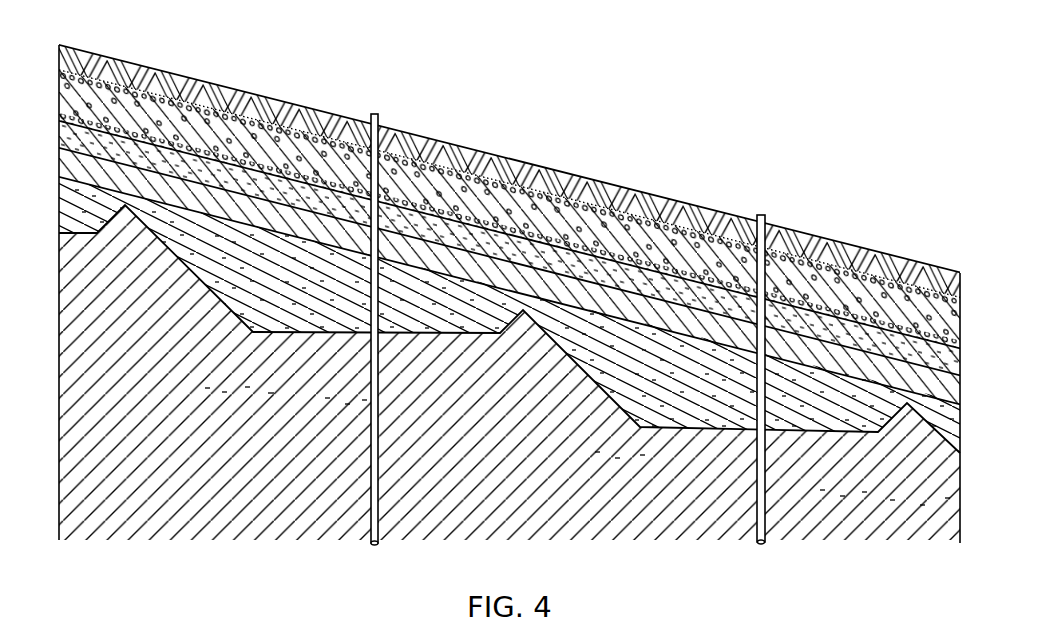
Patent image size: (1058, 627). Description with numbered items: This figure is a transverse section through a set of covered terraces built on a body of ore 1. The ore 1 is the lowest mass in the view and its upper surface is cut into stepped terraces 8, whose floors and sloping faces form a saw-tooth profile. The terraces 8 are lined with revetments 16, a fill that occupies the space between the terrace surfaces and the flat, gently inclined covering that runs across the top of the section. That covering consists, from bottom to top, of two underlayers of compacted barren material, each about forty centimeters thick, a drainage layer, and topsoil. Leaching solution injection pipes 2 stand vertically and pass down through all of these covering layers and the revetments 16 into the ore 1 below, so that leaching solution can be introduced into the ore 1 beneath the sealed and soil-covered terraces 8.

The ore 1 is at (858, 518).
The leaching solution injection pipes 2 is at (378, 113).
The terraces 8 is at (798, 432).
The revetments 16 is at (509, 315).